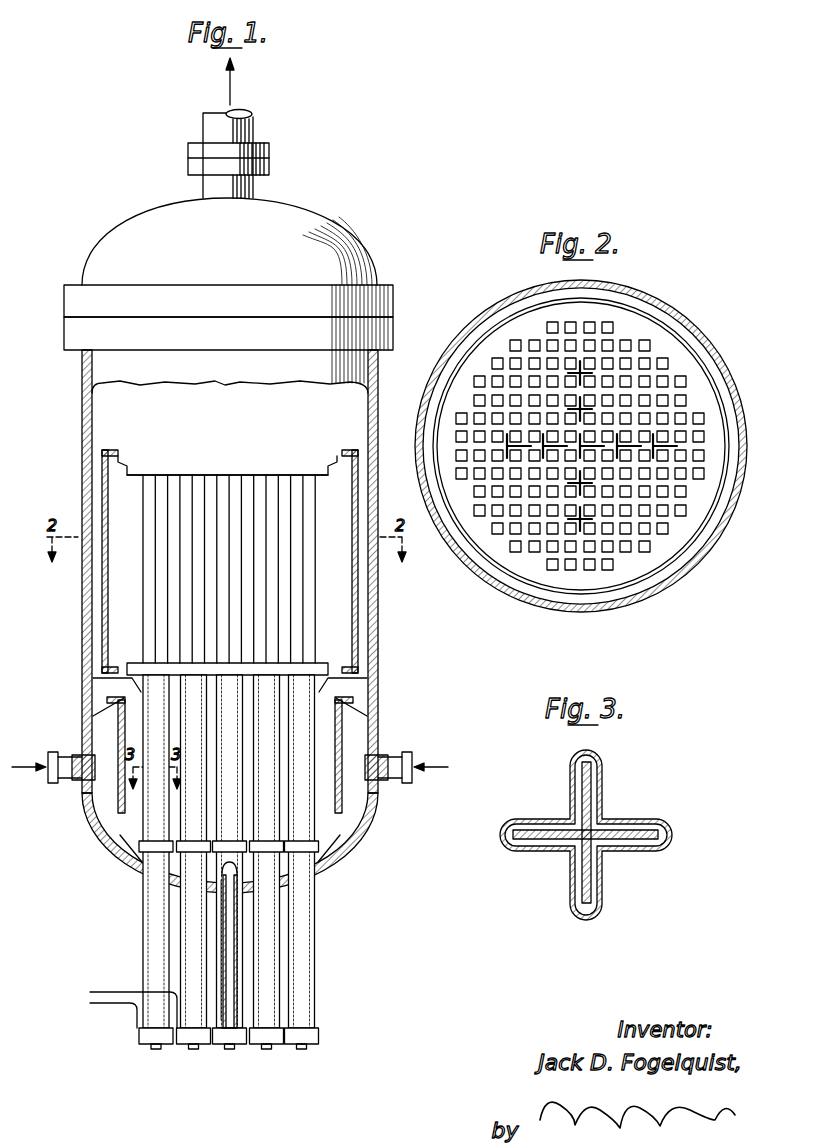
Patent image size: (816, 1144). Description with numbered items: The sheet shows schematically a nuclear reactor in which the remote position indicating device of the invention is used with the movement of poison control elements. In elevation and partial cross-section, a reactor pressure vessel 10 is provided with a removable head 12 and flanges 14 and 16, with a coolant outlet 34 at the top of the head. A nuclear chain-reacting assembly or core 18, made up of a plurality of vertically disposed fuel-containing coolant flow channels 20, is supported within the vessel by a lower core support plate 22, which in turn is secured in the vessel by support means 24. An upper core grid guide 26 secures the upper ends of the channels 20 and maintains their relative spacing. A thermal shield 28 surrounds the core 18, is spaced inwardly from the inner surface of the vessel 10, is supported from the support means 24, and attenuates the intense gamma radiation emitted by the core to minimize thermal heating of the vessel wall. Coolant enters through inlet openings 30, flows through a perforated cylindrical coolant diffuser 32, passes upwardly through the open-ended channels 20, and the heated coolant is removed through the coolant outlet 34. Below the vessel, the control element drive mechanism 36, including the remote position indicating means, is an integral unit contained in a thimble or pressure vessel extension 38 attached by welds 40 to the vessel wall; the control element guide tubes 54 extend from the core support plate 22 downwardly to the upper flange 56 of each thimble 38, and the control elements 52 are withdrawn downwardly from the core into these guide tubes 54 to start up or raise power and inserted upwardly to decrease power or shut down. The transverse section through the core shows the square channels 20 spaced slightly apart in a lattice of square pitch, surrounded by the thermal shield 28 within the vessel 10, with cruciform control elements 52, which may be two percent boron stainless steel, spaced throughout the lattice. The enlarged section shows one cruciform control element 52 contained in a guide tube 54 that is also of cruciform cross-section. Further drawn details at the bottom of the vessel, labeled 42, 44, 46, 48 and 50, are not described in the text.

In FIG. 1, the reactor pressure vessel 10 is at (90, 371).
In FIG. 2, the reactor pressure vessel 10 is at (743, 490).
In FIG. 1, the removable head 12 is at (305, 224).
In FIG. 1, the flange 14 is at (64, 300).
In FIG. 1, the flange 16 is at (64, 328).
In FIG. 1, the core 18 is at (320, 628).
In FIG. 2, the core 18 is at (655, 543).
In FIG. 1, the coolant flow channels 20 is at (160, 597).
In FIG. 2, the coolant flow channels 20 is at (645, 347).
In FIG. 1, the lower core support plate 22 is at (130, 665).
In FIG. 1, the support means 24 is at (98, 692).
In FIG. 1, the upper core grid guide 26 is at (160, 464).
In FIG. 1, the thermal shield 28 is at (104, 493).
In FIG. 2, the thermal shield 28 is at (703, 368).
In FIG. 1, the inlet openings 30 is at (75, 782).
In FIG. 1, the coolant diffuser 32 is at (342, 742).
In FIG. 1, the coolant outlet 34 is at (251, 128).
In FIG. 1, the control element drive mechanism 36 is at (230, 983).
In FIG. 1, the thimble 38 is at (280, 943).
In FIG. 1, the welds 40 is at (320, 872).
In FIG. 1, the end cap 42 is at (238, 1050).
In FIG. 1, the bottom caps 44 is at (188, 1036).
In FIG. 1, the annular passage 46 is at (220, 918).
In FIG. 1, the feed pipe 48 is at (112, 990).
In FIG. 1, the return pipe 50 is at (112, 1008).
In FIG. 2, the cruciform control elements 52 is at (577, 525).
In FIG. 3, the cruciform control elements 52 is at (625, 828).
In FIG. 1, the guide tube 54 is at (145, 830).
In FIG. 3, the guide tube 54 is at (634, 850).
In FIG. 1, the upper flange 56 is at (140, 848).